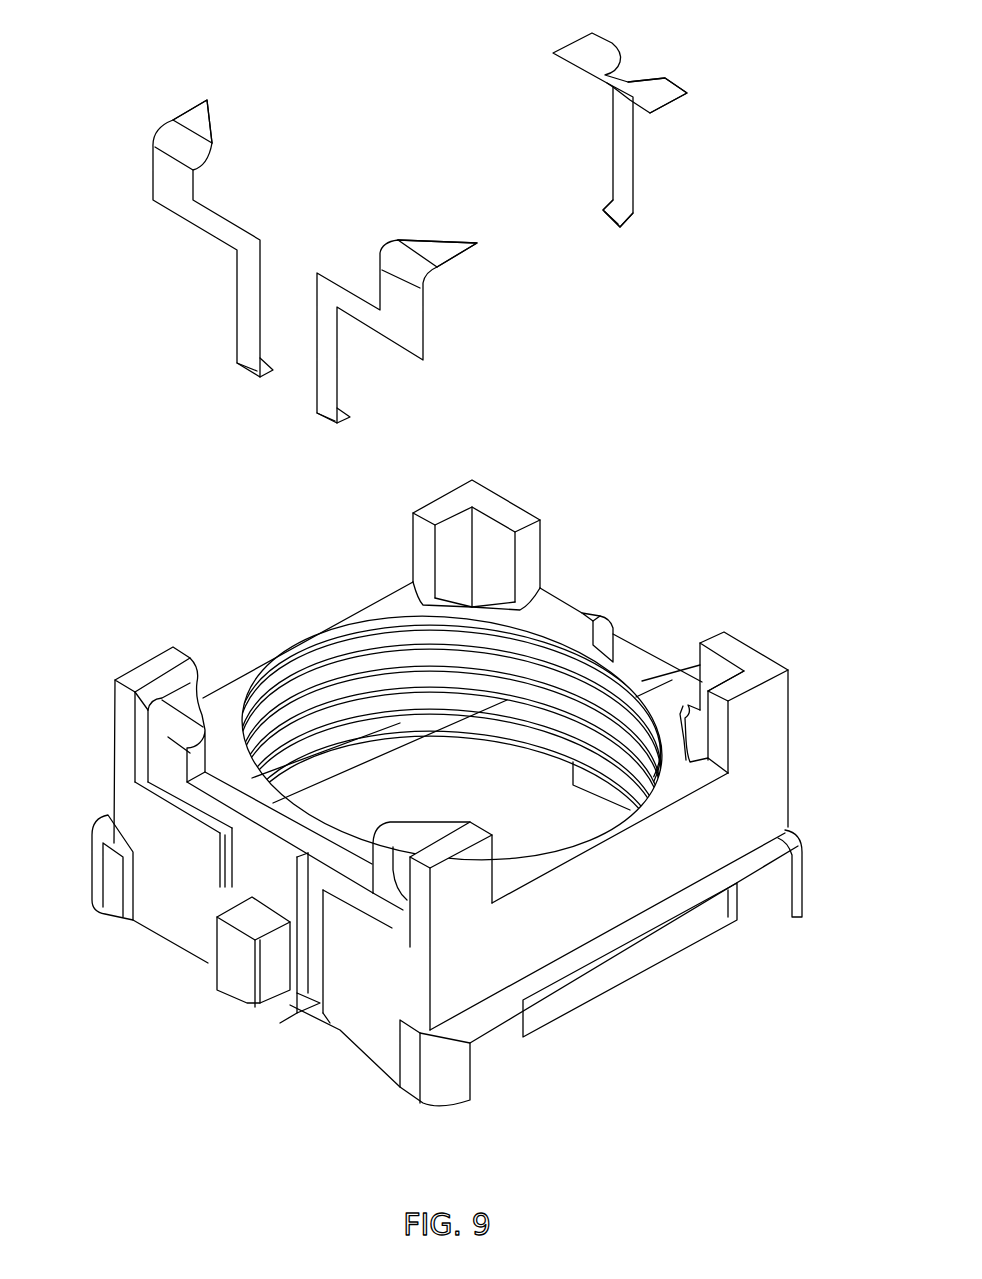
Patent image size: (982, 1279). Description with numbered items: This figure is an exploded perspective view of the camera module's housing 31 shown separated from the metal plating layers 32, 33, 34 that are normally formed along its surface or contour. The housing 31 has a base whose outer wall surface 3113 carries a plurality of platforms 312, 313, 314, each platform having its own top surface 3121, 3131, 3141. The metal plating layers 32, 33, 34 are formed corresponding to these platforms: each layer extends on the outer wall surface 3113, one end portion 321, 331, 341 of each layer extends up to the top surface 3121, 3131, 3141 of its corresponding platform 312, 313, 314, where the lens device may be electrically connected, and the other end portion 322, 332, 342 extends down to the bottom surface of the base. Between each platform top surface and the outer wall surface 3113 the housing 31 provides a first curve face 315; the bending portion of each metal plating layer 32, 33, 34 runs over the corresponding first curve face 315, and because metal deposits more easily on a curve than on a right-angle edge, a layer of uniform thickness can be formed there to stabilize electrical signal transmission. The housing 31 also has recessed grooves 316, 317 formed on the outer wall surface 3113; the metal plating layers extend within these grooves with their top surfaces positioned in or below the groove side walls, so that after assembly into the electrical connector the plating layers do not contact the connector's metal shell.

The housing 31 is at (150, 648).
The platform 312 is at (160, 768).
The top surface of platform 3121 is at (187, 700).
The platform 313 is at (390, 915).
The top surface of platform 3131 is at (435, 828).
The platform 314 is at (665, 655).
The top surface of platform 3141 is at (612, 666).
The first curve face 315 is at (158, 727).
The recessed groove 316 is at (233, 883).
The recessed groove 317 is at (260, 940).
The outer wall surface 3113 is at (145, 922).
The metal plating layer 32 is at (190, 100).
The end portion of metal plating layer 321 is at (195, 118).
The other end portion of metal plating layer 322 is at (268, 372).
The metal plating layer 33 is at (445, 282).
The end portion of metal plating layer 331 is at (440, 250).
The other end portion of metal plating layer 332 is at (352, 417).
The metal plating layer 34 is at (622, 33).
The end portion of metal plating layer 341 is at (660, 97).
The other end portion of metal plating layer 342 is at (633, 215).